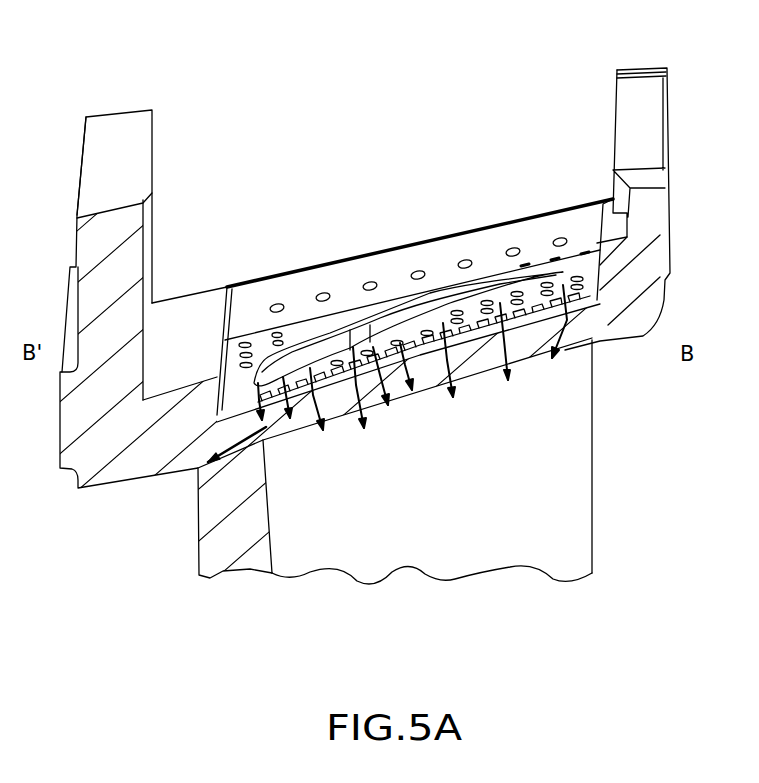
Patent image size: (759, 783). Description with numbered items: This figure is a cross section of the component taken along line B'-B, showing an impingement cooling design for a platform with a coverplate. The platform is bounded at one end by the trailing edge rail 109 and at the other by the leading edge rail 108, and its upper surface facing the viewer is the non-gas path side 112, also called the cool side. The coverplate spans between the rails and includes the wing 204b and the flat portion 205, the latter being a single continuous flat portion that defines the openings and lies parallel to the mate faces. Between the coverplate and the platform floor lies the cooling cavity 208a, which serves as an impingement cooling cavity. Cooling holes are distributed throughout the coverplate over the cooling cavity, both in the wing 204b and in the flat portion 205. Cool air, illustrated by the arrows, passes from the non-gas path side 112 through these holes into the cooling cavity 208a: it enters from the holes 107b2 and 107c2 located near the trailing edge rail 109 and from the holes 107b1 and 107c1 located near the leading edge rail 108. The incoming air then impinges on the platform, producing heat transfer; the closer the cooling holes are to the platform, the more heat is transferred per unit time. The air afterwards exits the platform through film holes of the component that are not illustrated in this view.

The trailing edge rail 109 is at (117, 113).
The leading edge rail 108 is at (643, 68).
The cooling holes 107b1 is at (515, 250).
The cooling holes 107b2 is at (273, 304).
The wing 204b is at (365, 265).
The non-gas path side 112 is at (192, 317).
The flat portion 205 is at (145, 430).
The cooling cavity 208a is at (287, 403).
The cooling holes 107c2 is at (382, 360).
The cooling holes 107c1 is at (550, 360).